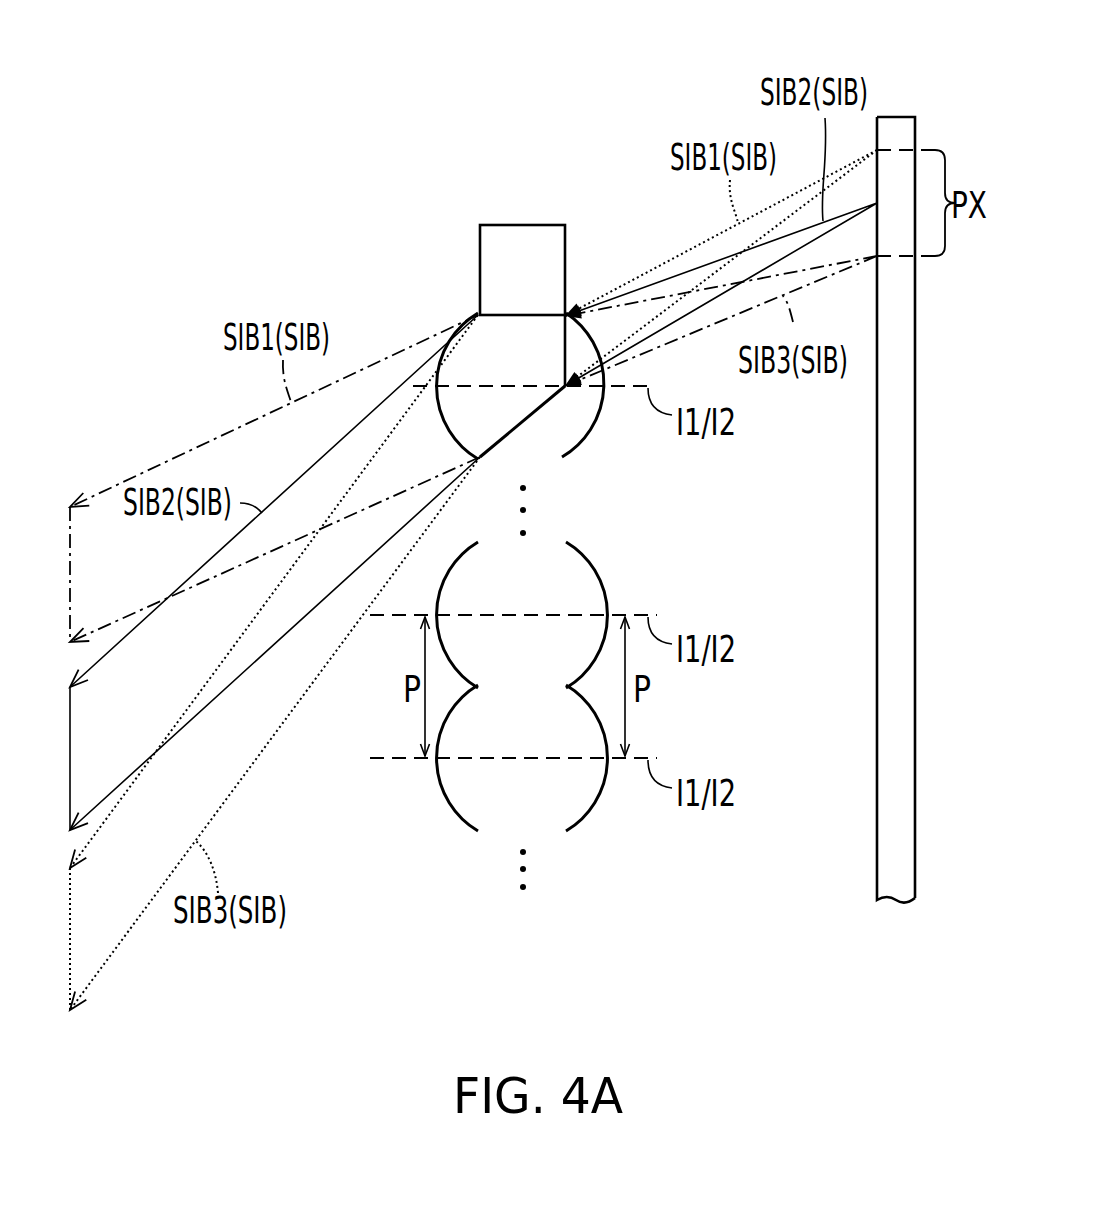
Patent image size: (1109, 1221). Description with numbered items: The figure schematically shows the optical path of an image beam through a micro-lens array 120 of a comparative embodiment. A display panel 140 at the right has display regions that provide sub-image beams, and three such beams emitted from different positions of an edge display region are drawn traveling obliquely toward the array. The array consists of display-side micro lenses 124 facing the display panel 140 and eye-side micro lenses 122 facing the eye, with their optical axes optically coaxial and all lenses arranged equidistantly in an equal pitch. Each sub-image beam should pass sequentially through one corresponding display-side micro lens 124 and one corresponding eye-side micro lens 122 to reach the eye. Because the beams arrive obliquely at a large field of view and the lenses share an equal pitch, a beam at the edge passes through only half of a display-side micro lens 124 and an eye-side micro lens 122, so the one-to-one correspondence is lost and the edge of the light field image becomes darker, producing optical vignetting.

The display panel 140 is at (896, 127).
The micro-lens array 120 is at (538, 580).
The eye-side micro lens 122 is at (462, 802).
The display-side micro lens 124 is at (585, 800).